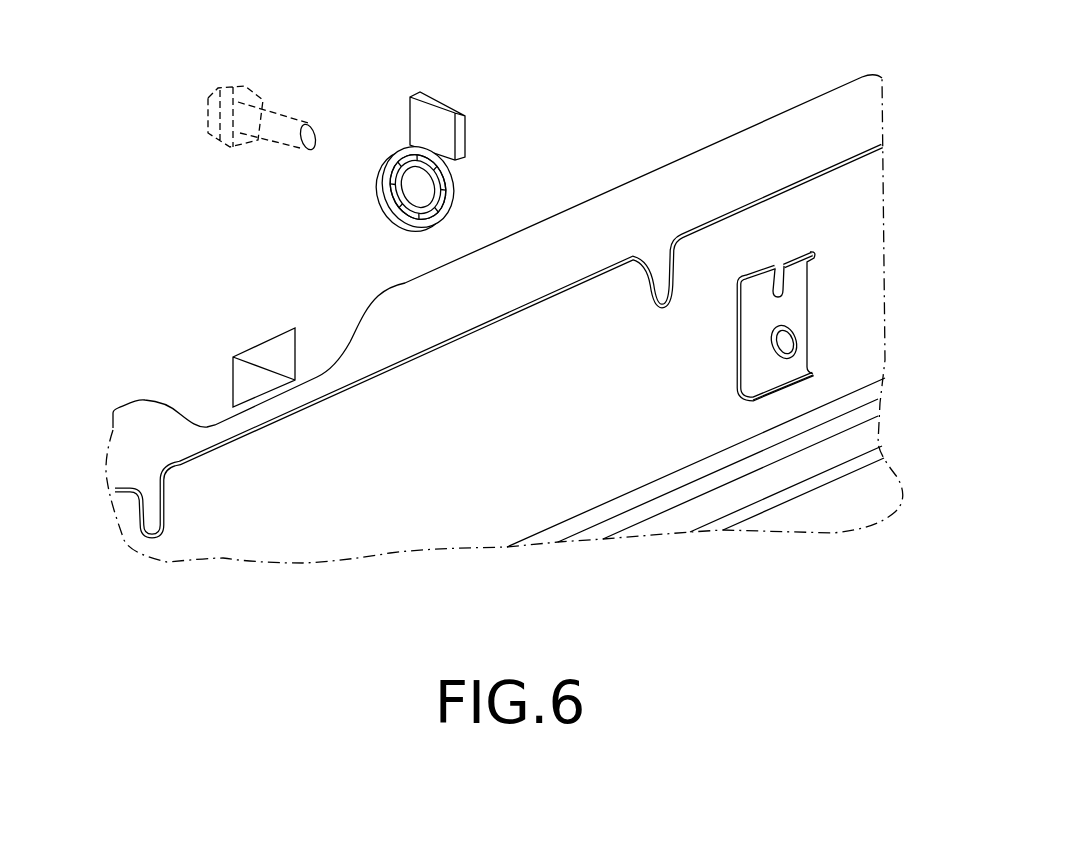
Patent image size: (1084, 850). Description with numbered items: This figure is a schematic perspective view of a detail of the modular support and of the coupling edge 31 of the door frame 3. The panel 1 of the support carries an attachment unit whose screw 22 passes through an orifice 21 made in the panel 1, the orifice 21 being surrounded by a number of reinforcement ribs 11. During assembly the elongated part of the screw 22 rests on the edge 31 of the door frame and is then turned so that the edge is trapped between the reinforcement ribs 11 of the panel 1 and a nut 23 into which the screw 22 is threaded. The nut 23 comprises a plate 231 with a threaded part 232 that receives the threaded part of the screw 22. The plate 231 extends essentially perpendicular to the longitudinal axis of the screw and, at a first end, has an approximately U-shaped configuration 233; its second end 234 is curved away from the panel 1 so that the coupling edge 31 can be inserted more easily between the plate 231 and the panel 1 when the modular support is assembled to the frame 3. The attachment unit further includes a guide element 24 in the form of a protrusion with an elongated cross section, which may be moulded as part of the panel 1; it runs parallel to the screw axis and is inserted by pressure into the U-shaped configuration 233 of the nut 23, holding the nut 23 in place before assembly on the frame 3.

The panel 1 is at (288, 292).
The reinforcement ribs 11 is at (404, 174).
The orifice 21 is at (422, 188).
The screw 22 is at (277, 122).
The guide element 24 is at (455, 110).
The nut 23 is at (789, 412).
The plate 231 is at (755, 358).
The threaded part 232 is at (797, 345).
The U-shaped configuration 233 is at (785, 282).
The second end 234 is at (797, 368).
The frame 3 is at (790, 395).
The coupling edge 31 is at (272, 467).